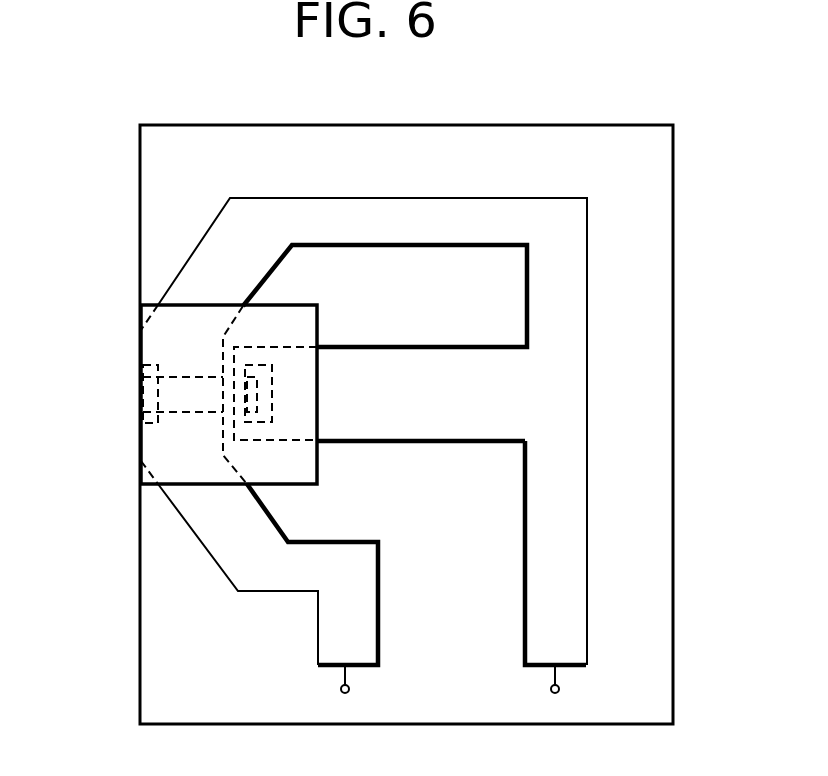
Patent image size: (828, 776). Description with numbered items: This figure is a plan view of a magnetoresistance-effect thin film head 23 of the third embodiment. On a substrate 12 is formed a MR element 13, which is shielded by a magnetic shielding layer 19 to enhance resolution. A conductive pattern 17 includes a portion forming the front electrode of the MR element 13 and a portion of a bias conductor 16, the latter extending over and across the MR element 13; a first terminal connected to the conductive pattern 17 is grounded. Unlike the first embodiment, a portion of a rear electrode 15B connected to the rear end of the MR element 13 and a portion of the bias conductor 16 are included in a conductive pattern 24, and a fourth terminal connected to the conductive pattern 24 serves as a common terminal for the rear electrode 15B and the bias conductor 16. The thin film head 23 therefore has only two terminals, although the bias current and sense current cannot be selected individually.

The thin film head 23 is at (76, 114).
The substrate 12 is at (652, 636).
The MR element 13 is at (176, 386).
The conductive pattern 17 is at (180, 432).
The magnetic shielding layer 19 is at (320, 318).
The rear electrode 15B is at (415, 428).
The conductive pattern 24 is at (572, 527).
The bias conductor 16 is at (428, 213).